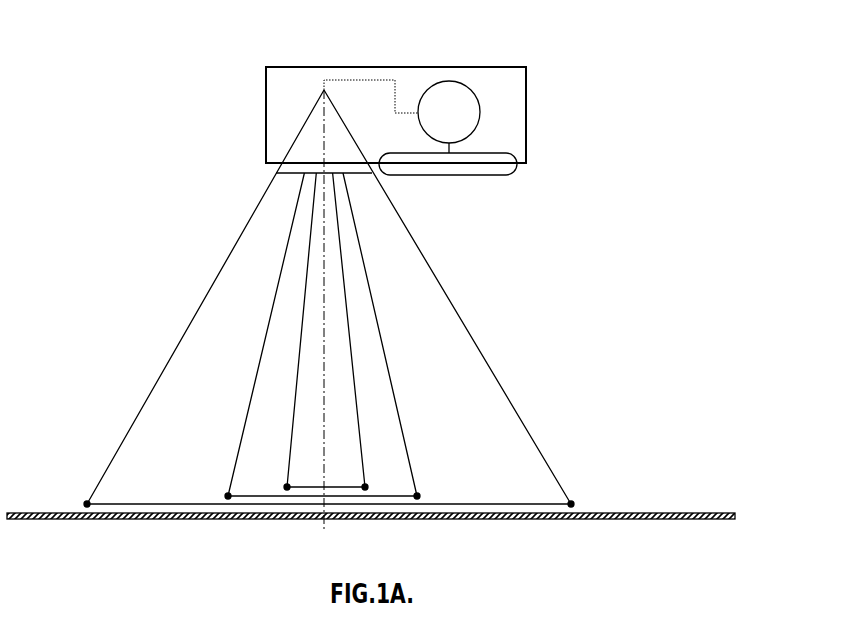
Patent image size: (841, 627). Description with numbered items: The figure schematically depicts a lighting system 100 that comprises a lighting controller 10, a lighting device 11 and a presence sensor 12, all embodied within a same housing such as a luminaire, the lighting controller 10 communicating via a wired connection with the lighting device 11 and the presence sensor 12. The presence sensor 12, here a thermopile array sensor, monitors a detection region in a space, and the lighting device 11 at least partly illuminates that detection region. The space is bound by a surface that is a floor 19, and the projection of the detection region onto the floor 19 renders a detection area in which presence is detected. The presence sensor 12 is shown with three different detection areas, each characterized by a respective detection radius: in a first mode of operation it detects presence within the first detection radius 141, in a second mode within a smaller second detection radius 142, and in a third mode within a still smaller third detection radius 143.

The lighting system 100 is at (249, 50).
The lighting controller 10 is at (480, 101).
The lighting device 11 is at (517, 153).
The presence sensor 12 is at (300, 135).
The first detection radius 141 is at (151, 504).
The second detection radius 142 is at (263, 496).
The third detection radius 143 is at (302, 487).
The floor 19 is at (655, 513).